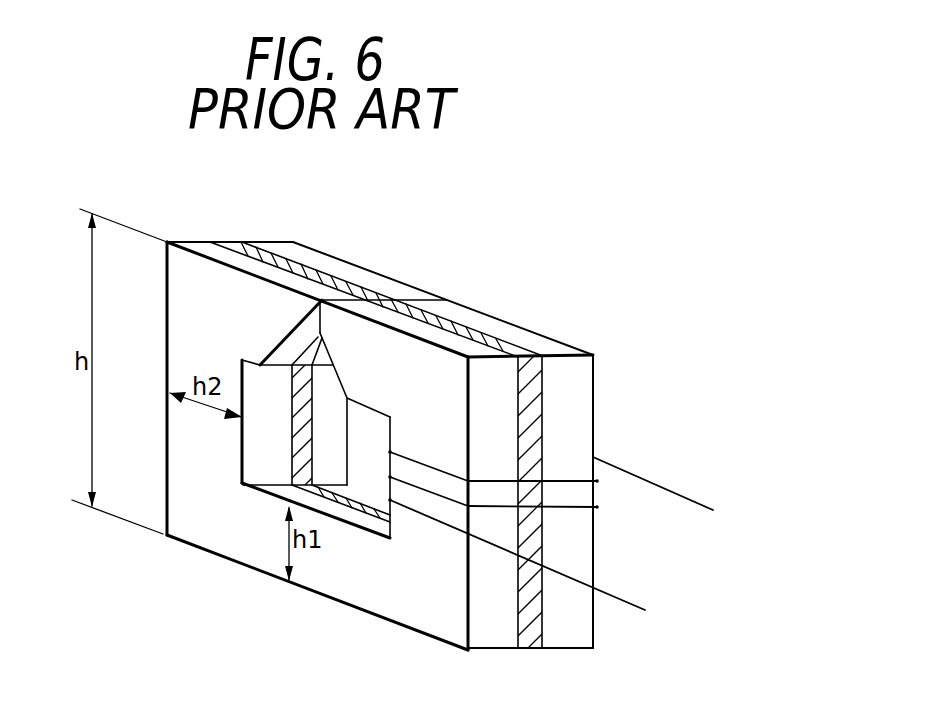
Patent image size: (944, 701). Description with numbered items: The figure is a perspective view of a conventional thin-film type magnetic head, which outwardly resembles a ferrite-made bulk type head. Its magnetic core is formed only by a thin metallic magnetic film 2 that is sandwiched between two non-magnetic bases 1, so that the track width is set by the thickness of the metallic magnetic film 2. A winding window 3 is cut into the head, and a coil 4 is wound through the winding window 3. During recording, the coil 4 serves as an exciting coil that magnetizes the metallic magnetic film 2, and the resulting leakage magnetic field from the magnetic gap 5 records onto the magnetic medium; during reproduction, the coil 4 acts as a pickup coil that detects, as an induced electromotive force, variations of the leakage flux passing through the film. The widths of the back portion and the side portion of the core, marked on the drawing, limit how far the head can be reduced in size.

The non-magnetic base 1 is at (208, 248).
The metallic magnetic film 2 is at (465, 330).
The winding window 3 is at (368, 427).
The coil 4 is at (653, 482).
The magnetic gap 5 is at (380, 292).